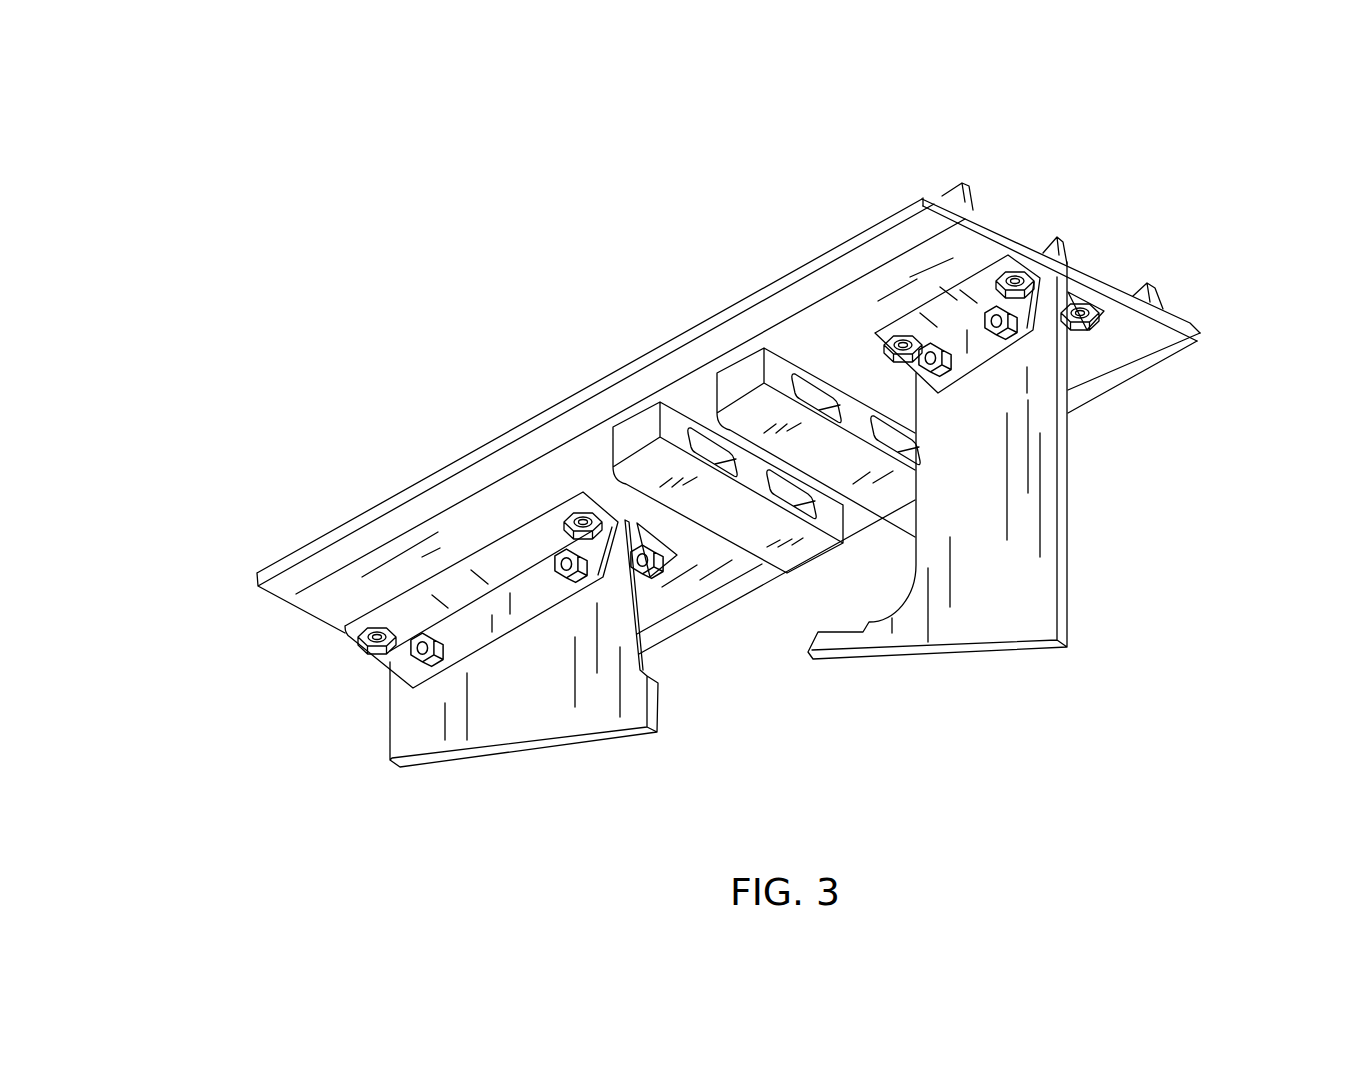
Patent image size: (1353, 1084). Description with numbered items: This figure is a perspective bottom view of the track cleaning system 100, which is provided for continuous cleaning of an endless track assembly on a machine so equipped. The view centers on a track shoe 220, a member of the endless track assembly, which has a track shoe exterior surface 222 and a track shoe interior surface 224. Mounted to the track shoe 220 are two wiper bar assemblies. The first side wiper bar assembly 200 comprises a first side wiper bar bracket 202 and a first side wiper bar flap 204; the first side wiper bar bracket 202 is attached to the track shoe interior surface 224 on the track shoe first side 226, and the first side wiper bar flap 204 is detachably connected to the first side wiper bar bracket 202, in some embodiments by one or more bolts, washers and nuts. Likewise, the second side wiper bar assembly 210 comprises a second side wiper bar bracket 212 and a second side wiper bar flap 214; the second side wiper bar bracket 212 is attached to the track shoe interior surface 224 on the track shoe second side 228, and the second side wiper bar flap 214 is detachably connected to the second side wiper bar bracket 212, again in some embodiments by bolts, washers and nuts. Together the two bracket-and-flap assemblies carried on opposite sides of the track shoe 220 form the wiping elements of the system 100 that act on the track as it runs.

The track cleaning system 100 is at (320, 226).
The first side wiper bar assembly 200 is at (1122, 472).
The first side wiper bar bracket 202 is at (875, 332).
The first side wiper bar flap 204 is at (885, 660).
The second side wiper bar assembly 210 is at (328, 720).
The second side wiper bar bracket 212 is at (585, 494).
The second side wiper bar flap 214 is at (660, 716).
The track shoe 220 is at (1062, 250).
The track shoe exterior surface 222 is at (925, 196).
The track shoe interior surface 224 is at (1097, 350).
The track shoe first side 226 is at (1090, 285).
The track shoe second side 228 is at (327, 601).